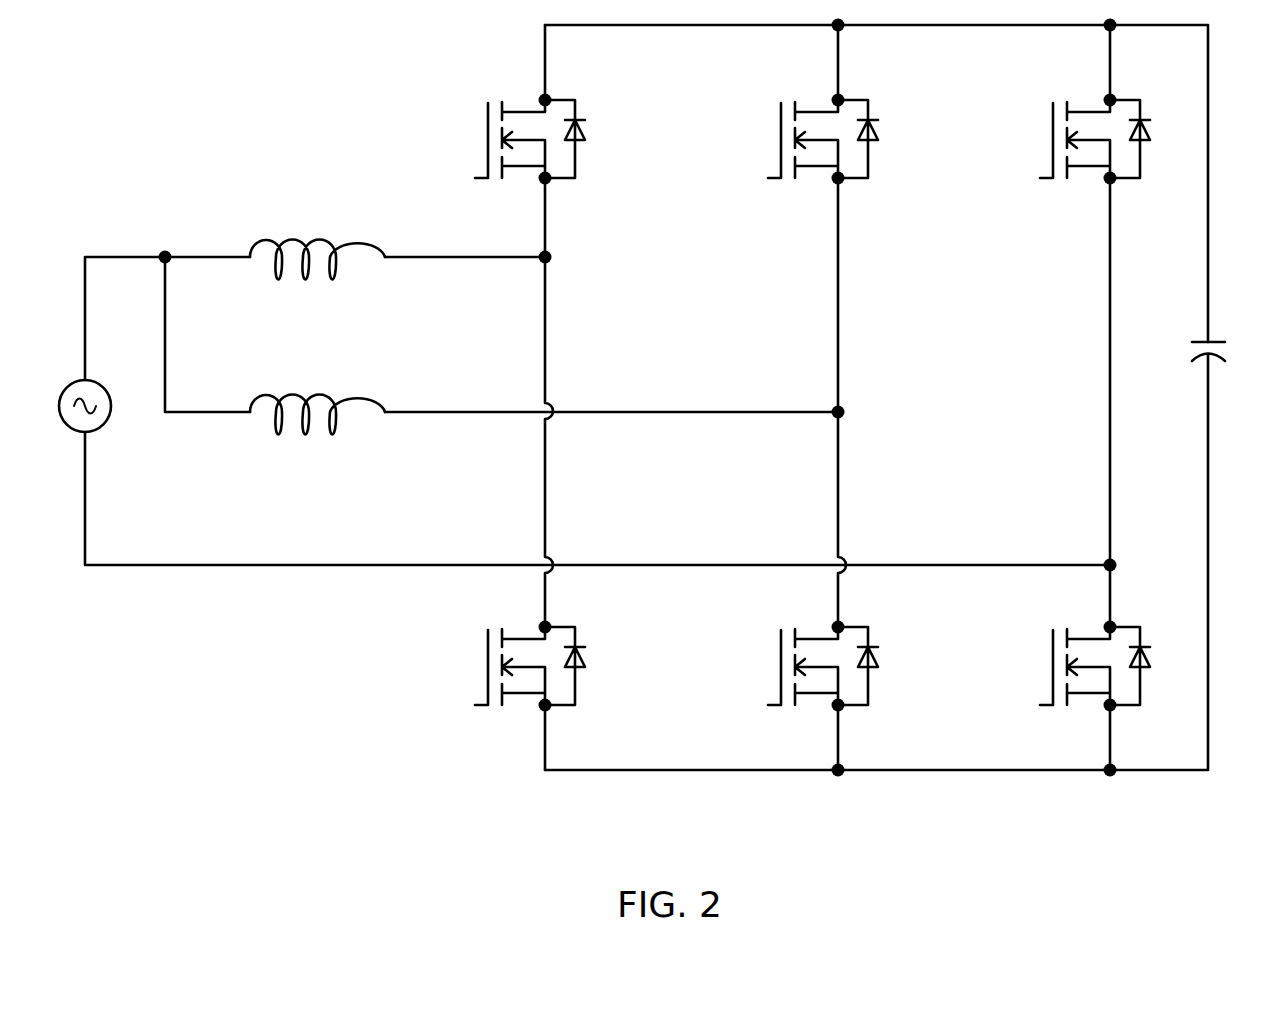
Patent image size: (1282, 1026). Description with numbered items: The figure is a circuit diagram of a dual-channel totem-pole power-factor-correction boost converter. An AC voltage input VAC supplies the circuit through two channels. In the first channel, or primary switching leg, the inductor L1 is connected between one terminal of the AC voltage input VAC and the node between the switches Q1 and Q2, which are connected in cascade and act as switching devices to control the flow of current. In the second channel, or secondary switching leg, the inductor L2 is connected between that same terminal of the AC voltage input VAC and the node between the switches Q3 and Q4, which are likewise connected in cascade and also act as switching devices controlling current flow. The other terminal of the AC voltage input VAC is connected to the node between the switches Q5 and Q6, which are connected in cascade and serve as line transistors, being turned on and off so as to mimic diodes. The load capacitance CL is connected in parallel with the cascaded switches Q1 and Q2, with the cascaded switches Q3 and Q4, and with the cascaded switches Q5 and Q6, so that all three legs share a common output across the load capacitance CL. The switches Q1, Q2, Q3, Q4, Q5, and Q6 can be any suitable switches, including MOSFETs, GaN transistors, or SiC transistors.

The switch Q1 is at (511, 139).
The switch Q2 is at (511, 666).
The switch Q3 is at (804, 139).
The switch Q4 is at (804, 666).
The switch Q5 is at (1076, 139).
The switch Q6 is at (1076, 666).
The inductor L1 is at (316, 278).
The inductor L2 is at (316, 431).
The AC voltage input VAC is at (114, 424).
The load capacitance CL is at (1233, 355).